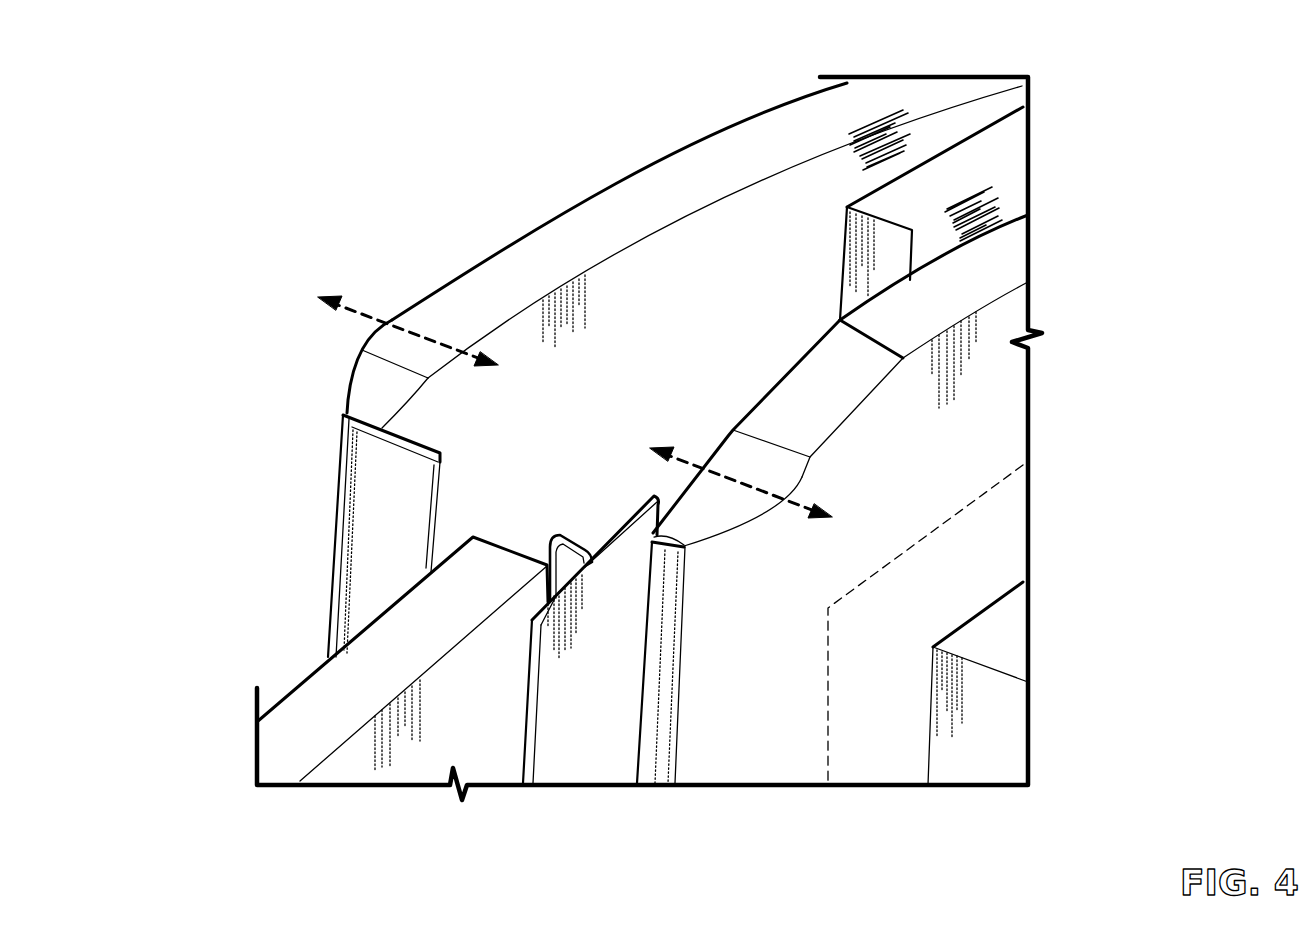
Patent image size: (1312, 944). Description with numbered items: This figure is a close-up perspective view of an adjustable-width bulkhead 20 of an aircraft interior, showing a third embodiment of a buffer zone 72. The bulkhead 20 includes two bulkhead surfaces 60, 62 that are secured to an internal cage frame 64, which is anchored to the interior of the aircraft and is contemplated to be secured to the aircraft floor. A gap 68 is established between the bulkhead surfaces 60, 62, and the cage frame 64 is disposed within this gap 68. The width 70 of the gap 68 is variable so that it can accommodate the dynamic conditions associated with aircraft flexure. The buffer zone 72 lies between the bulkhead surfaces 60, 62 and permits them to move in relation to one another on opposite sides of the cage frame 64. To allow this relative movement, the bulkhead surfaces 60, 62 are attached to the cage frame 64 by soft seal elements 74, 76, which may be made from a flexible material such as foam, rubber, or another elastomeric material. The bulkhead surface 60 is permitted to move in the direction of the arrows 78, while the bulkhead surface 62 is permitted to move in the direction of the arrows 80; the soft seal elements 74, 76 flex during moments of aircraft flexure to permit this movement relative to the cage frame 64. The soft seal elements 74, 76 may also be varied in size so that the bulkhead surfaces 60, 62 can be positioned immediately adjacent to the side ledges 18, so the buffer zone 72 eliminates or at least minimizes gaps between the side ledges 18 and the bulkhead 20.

The side ledge 18 is at (1001, 739).
The bulkhead 20 is at (1045, 430).
The bulkhead surface 60 is at (937, 466).
The bulkhead surface 62 is at (567, 233).
The cage frame 64 is at (1013, 148).
The gap 68 is at (694, 376).
The width 70 is at (867, 300).
The buffer zone 72 is at (882, 573).
The soft seal element 74 is at (990, 218).
The soft seal element 76 is at (870, 152).
The arrows 78 is at (790, 500).
The arrows 80 is at (358, 312).